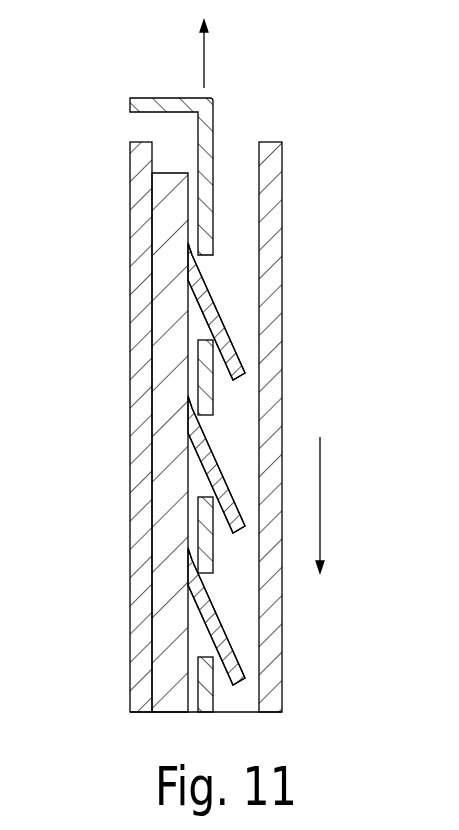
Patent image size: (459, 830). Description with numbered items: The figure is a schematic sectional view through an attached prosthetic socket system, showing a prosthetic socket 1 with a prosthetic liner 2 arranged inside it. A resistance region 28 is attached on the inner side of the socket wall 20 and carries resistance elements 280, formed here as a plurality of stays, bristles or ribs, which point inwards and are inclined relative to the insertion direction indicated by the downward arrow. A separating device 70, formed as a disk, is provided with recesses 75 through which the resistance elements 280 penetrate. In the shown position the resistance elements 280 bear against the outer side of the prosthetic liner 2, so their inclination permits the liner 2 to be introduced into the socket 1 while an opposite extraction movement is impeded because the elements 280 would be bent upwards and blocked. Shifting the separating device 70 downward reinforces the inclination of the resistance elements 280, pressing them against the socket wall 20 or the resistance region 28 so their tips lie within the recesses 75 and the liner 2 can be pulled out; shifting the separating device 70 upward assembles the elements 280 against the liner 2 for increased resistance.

The prosthetic socket 1 is at (122, 296).
The prosthetic liner 2 is at (282, 173).
The socket wall 20 is at (140, 553).
The resistance region 28 is at (167, 335).
The separating device 70 is at (213, 98).
The recesses 75 is at (208, 262).
The resistance elements 280 is at (208, 300).